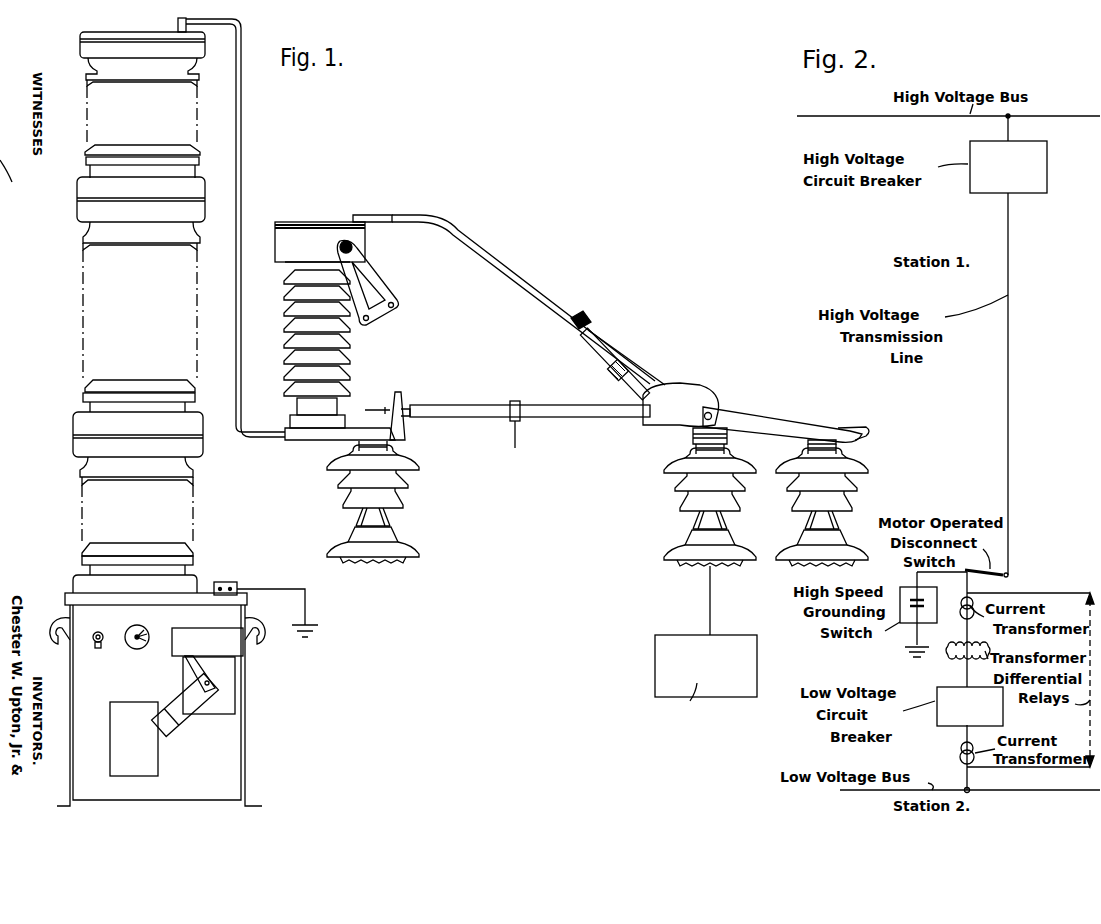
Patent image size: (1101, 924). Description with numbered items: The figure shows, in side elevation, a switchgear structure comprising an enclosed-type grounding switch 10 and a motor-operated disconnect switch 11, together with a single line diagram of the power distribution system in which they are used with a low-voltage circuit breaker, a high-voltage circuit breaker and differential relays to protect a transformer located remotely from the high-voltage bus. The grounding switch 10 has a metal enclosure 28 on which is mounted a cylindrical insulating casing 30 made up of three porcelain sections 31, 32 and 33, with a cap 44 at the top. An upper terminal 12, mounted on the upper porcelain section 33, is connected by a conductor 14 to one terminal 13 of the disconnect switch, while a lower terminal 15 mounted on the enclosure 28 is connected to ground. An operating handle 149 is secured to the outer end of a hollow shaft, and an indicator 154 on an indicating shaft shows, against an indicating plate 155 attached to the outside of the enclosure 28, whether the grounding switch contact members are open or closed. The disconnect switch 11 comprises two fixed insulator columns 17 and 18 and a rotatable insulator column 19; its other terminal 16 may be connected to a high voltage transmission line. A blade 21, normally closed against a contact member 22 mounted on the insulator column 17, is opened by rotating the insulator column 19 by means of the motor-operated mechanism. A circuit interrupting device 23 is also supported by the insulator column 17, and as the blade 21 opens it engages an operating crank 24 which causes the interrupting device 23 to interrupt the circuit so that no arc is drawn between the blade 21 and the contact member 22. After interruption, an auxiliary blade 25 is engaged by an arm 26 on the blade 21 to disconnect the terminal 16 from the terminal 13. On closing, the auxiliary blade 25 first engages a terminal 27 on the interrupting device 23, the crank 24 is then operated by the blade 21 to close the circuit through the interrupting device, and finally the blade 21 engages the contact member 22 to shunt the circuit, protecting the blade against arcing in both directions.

The grounding switch 10 is at (252, 528).
The motor-operated disconnect switch 11 is at (520, 500).
The terminal 12 is at (192, 32).
The terminal 13 is at (278, 440).
The conductor 14 is at (243, 150).
The terminal 15 is at (226, 582).
The terminal 16 is at (838, 435).
The insulator column 17 is at (405, 465).
The insulator column 18 is at (850, 488).
The insulator column 19 is at (680, 505).
The blade 21 is at (525, 402).
The contact member 22 is at (398, 391).
The circuit interrupting device 23 is at (288, 237).
The operating crank 24 is at (395, 304).
The auxiliary blade 25 is at (560, 308).
The arm 26 is at (517, 440).
The terminal 27 is at (380, 215).
The metal enclosure 28 is at (238, 748).
The cylindrical insulating casing 30 is at (82, 268).
The porcelain section 31 is at (82, 515).
The porcelain section 32 is at (82, 352).
The porcelain section 33 is at (198, 118).
The top cap 44 is at (90, 32).
The operating handle 149 is at (180, 730).
The indicator 154 is at (190, 667).
The indicating plate 155 is at (172, 640).